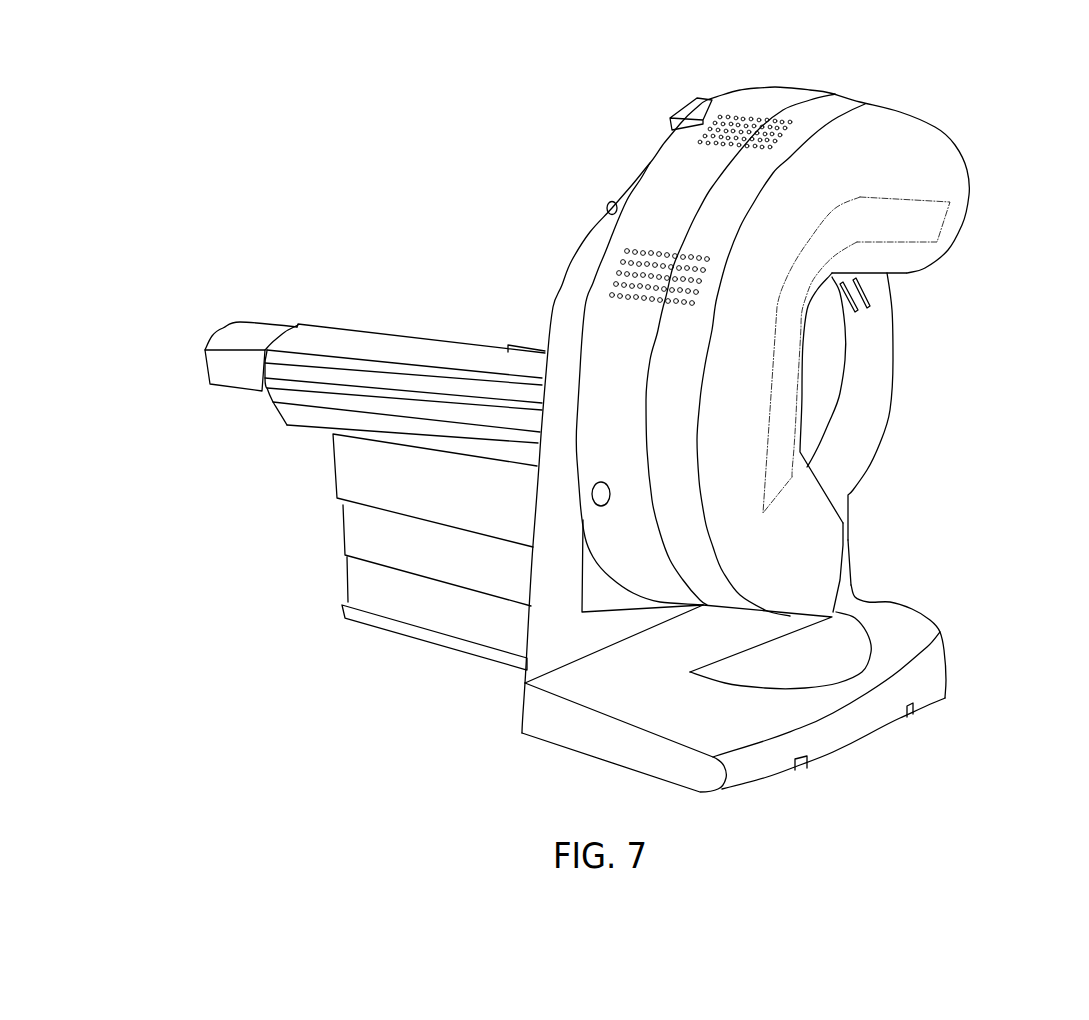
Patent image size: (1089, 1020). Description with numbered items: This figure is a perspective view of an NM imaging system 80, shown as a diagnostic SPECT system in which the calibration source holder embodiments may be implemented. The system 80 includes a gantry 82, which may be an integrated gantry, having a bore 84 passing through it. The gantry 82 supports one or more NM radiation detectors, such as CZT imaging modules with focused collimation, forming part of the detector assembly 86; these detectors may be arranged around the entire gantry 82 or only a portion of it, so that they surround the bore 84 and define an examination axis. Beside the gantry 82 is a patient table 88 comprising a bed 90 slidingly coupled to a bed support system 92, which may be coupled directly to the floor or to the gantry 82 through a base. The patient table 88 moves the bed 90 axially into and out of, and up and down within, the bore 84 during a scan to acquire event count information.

The NM imaging system 80 is at (293, 685).
The gantry 82 is at (981, 107).
The bore 84 is at (944, 397).
The detector assembly 86 is at (828, 536).
The patient table 88 is at (259, 258).
The bed 90 is at (404, 330).
The bed support system 92 is at (417, 648).